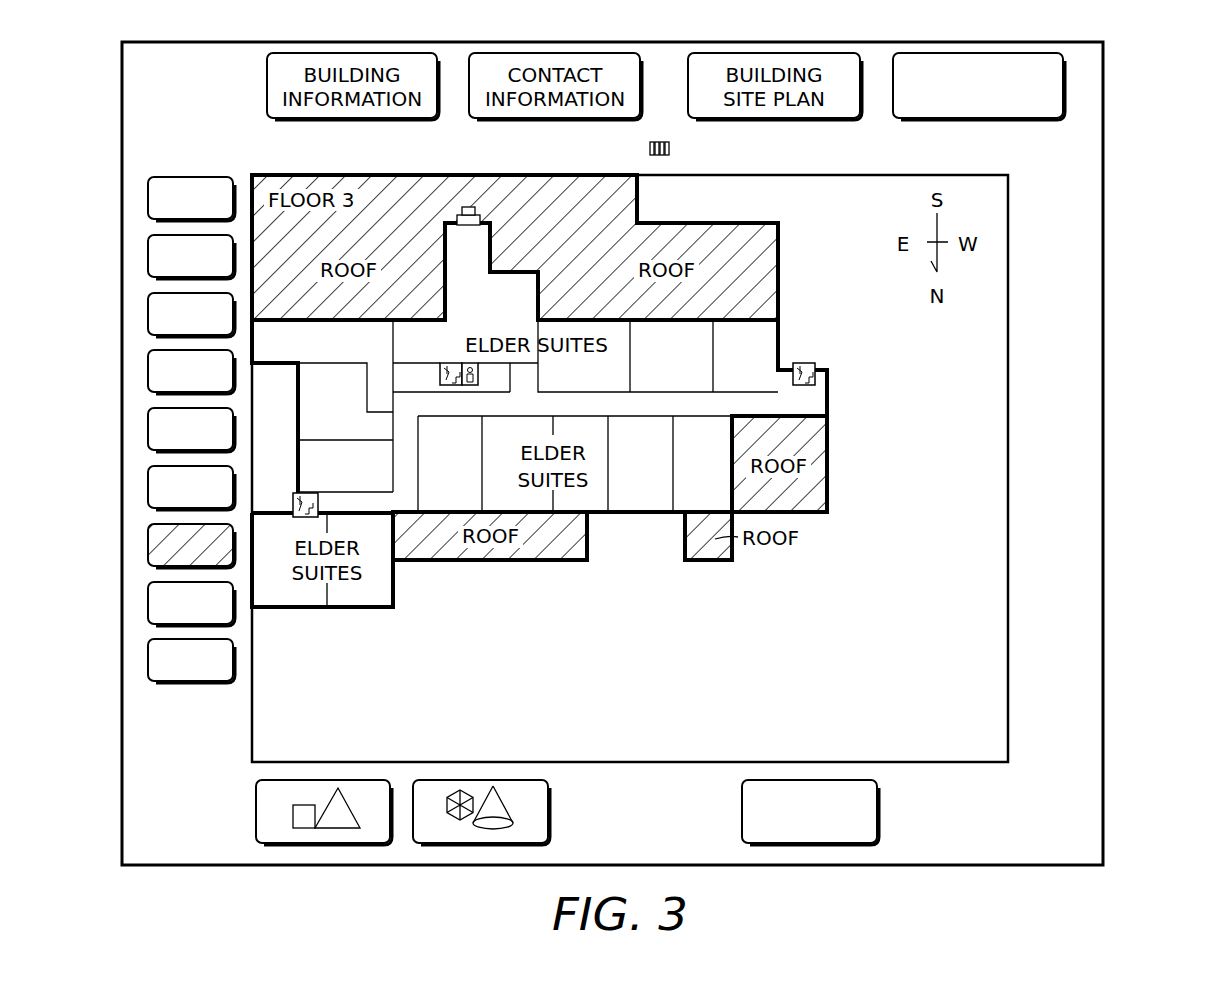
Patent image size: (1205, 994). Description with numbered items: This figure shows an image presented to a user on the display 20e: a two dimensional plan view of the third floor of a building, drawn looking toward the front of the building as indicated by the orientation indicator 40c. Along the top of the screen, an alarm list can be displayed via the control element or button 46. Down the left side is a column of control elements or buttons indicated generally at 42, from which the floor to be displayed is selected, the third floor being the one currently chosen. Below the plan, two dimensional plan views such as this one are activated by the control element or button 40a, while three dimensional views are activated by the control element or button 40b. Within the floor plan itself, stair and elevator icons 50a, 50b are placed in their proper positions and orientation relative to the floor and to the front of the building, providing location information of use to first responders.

The display 20e is at (1136, 108).
The alarm list control element or button 46 is at (980, 121).
The floor selection control elements or buttons 42 is at (192, 724).
The two dimensional view control element or button 40a is at (256, 810).
The three dimensional view control element or button 40b is at (548, 812).
The orientation indicator 40c is at (878, 812).
The stair icon 50a is at (455, 362).
The elevator icon 50b is at (470, 386).